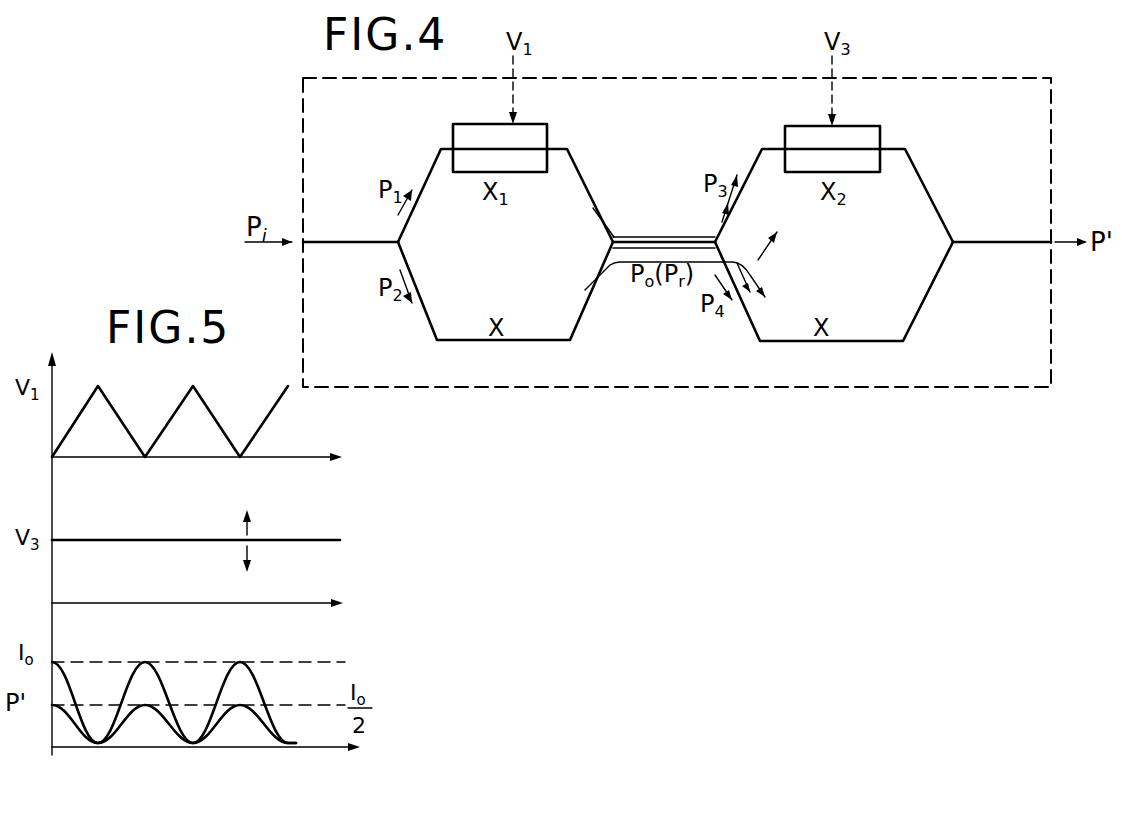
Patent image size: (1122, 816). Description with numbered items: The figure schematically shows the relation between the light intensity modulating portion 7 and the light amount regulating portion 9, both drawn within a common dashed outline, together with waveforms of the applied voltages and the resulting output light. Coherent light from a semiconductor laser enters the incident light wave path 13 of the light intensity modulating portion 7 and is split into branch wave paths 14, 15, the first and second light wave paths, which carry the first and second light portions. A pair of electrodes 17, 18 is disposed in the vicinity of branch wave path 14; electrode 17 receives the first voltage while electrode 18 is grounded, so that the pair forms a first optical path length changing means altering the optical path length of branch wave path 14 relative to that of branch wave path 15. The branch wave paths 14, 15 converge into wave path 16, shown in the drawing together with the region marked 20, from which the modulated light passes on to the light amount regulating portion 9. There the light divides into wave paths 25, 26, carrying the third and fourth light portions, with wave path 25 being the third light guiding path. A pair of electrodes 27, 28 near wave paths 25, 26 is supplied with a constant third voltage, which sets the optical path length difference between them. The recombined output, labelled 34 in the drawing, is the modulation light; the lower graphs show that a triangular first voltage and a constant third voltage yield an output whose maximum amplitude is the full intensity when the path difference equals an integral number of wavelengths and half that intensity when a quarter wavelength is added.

The light intensity modulating portion 7 is at (677, 213).
The light amount regulating portion 9 is at (697, 78).
The incident light wave path 13 is at (345, 242).
The branch wave path 14 is at (566, 149).
The branch wave path 15 is at (512, 340).
The wave path 16 is at (675, 244).
The electrode 17 is at (492, 128).
The electrode 18 is at (486, 124).
The coupling region 20 is at (648, 237).
The wave path 25 is at (906, 149).
The wave path 26 is at (857, 341).
The electrode 27 is at (818, 129).
The electrode 28 is at (808, 126).
The output waveguide 34 is at (1007, 242).